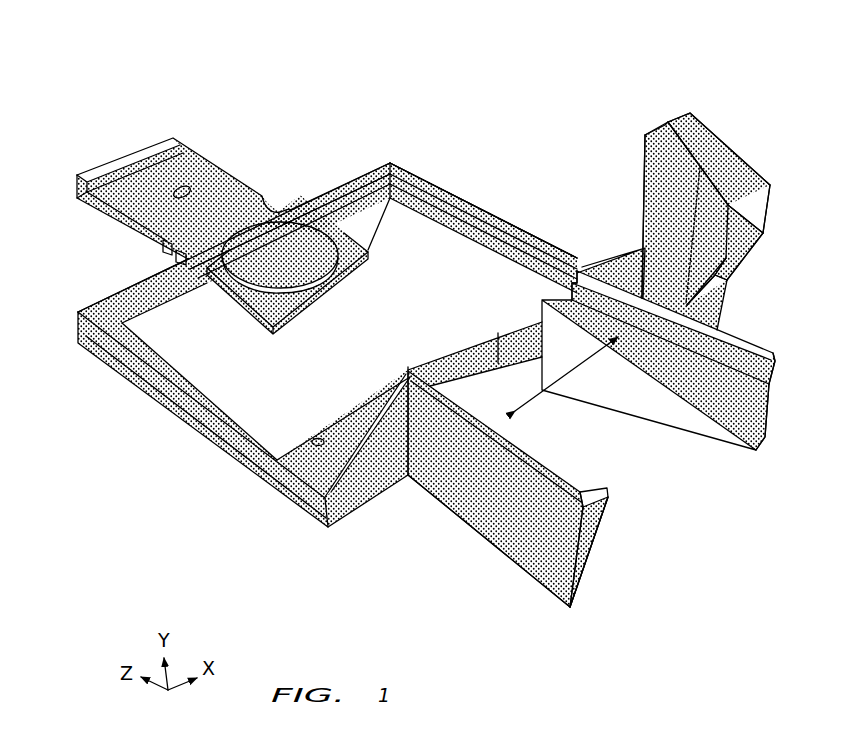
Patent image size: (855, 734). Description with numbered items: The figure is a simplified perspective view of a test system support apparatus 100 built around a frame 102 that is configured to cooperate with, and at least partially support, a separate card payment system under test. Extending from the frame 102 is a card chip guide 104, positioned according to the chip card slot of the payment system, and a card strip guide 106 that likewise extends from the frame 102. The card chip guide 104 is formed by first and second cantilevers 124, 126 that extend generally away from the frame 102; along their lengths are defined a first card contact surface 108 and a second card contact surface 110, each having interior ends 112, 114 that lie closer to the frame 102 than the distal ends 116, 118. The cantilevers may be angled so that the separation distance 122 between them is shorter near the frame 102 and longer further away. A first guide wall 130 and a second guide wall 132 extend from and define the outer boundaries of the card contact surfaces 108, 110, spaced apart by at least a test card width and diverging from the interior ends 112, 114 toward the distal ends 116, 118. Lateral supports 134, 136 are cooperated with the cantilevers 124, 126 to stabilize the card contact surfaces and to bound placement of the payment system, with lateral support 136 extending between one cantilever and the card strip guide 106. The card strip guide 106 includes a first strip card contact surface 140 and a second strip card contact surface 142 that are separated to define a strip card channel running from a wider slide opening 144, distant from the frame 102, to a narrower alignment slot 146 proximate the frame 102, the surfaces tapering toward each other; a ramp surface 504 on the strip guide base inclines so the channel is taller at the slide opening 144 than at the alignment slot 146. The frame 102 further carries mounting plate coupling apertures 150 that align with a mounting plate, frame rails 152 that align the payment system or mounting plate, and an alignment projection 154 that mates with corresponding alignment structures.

The support apparatus 100 is at (442, 77).
The frame 102 is at (158, 424).
The card chip guide 104 is at (506, 620).
The card strip guide 106 is at (778, 130).
The first card contact surface 108 is at (586, 476).
The second card contact surface 110 is at (726, 370).
The interior end of first card contact surface 112 is at (438, 362).
The interior end of second card contact surface 114 is at (556, 293).
The distal end of first card contact surface 116 is at (593, 503).
The distal end of second card contact surface 118 is at (768, 384).
The separation distance 122 is at (566, 380).
The first cantilever 124 is at (569, 606).
The second cantilever 126 is at (757, 452).
The first guide wall 130 is at (527, 458).
The second guide wall 132 is at (774, 357).
The lateral support 134 is at (372, 492).
The lateral support 136 is at (628, 246).
The first strip card contact surface 140 is at (730, 192).
The second strip card contact surface 142 is at (712, 156).
The slide opening 144 is at (754, 254).
The alignment slot 146 is at (659, 122).
The mounting plate coupling apertures 150 is at (174, 193).
The frame rails 152 is at (392, 164).
The alignment projection 154 is at (284, 230).
The ramp surface 504 is at (713, 280).